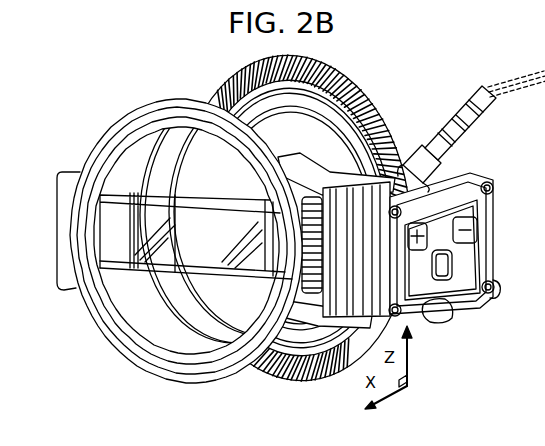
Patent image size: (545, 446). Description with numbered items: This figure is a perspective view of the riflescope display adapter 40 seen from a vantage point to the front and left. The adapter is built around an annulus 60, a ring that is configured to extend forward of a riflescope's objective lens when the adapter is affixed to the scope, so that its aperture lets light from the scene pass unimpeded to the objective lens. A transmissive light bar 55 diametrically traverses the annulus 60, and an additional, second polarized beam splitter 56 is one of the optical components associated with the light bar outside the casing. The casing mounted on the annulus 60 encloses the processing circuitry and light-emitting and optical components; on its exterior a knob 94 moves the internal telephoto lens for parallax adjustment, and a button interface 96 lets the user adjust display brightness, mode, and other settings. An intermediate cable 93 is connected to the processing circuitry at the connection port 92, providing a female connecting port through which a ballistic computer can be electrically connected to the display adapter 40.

The riflescope display adapter 40 is at (286, 221).
The annulus 60 is at (133, 115).
The second polarized beam splitter 56 is at (215, 265).
The transmissive light bar 55 is at (260, 268).
The connection port 92 is at (412, 157).
The intermediate cable 93 is at (482, 90).
The knob 94 is at (424, 312).
The button interface 96 is at (455, 263).